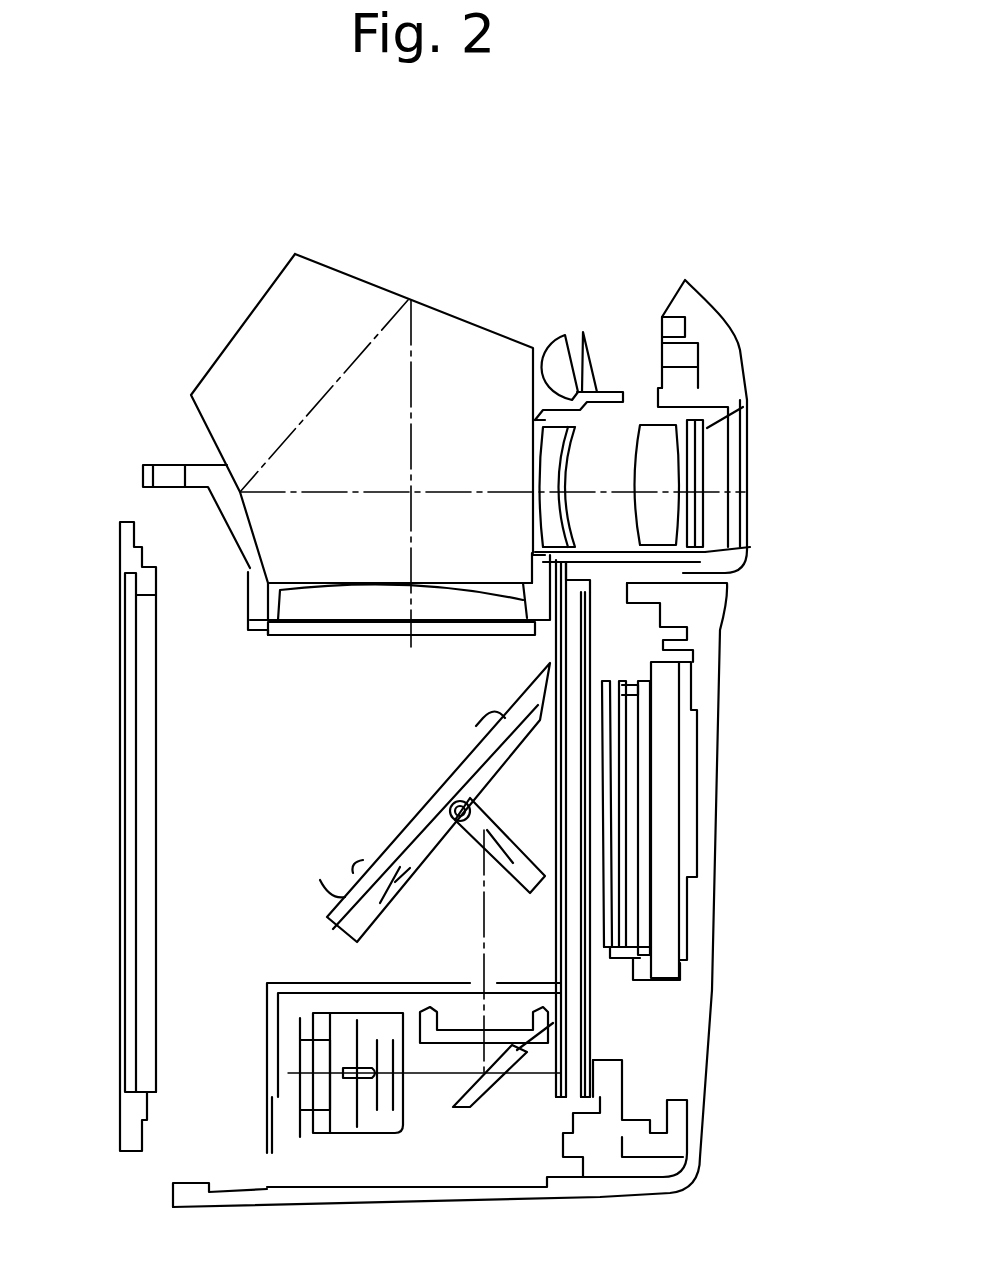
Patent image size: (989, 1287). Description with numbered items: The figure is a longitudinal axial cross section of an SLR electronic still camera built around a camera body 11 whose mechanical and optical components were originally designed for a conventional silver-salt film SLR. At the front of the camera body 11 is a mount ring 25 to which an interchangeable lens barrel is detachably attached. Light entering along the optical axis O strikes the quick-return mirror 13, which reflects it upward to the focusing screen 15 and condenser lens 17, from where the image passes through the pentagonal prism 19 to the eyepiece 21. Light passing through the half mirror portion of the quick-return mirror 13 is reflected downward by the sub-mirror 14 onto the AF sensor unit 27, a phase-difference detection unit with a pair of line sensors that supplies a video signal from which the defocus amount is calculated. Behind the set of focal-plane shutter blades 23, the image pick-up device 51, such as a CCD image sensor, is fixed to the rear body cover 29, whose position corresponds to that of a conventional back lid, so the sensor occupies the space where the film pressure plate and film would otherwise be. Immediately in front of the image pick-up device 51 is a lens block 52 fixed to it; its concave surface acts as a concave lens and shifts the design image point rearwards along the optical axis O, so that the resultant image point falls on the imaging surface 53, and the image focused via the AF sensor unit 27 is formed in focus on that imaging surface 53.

The camera body 11 is at (338, 444).
The pentagonal prism 19 is at (482, 330).
The eyepiece 21 is at (637, 409).
The mount ring 25 is at (118, 543).
The condenser lens 17 is at (287, 610).
The focusing screen 15 is at (292, 628).
The quick-return mirror 13 is at (347, 895).
The sub-mirror 14 is at (522, 892).
The rear body cover 29 is at (713, 718).
The image pick-up device 51 is at (667, 757).
The imaging surface 53 is at (635, 850).
The lens block 52 is at (612, 943).
The focal-plane shutter blades 23 is at (575, 975).
The AF sensor unit 27 is at (445, 1105).
The optical axis O is at (83, 837).